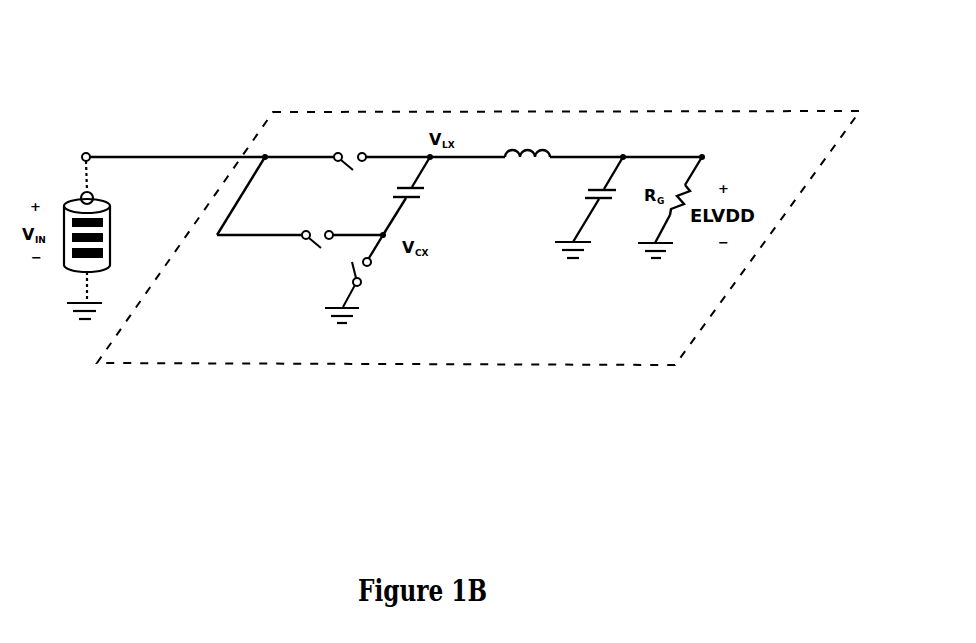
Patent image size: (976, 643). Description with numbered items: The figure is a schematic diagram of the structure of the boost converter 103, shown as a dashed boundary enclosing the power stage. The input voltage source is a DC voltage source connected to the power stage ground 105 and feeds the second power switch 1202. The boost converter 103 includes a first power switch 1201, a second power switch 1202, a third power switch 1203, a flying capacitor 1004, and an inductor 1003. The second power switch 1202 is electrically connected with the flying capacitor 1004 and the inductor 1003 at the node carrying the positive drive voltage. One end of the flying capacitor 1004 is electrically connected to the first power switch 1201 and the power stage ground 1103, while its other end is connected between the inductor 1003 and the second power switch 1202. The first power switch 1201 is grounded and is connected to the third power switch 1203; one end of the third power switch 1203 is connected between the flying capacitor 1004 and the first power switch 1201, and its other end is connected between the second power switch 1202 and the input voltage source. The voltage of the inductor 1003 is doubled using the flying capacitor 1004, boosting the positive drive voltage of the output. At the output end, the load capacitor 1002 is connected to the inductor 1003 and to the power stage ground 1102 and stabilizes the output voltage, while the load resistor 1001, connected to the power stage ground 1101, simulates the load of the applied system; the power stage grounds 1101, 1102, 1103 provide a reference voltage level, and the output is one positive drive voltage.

The boost converter 103 is at (693, 112).
The power stage ground 105 is at (73, 322).
The load resistor 1001 is at (668, 210).
The load capacitor 1002 is at (585, 198).
The inductor 1003 is at (530, 143).
The flying capacitor 1004 is at (420, 198).
The power stage ground 1101 is at (647, 256).
The power stage ground 1102 is at (563, 253).
The power stage ground 1103 is at (350, 325).
The first power switch 1201 is at (345, 267).
The second power switch 1202 is at (338, 172).
The third power switch 1203 is at (307, 242).